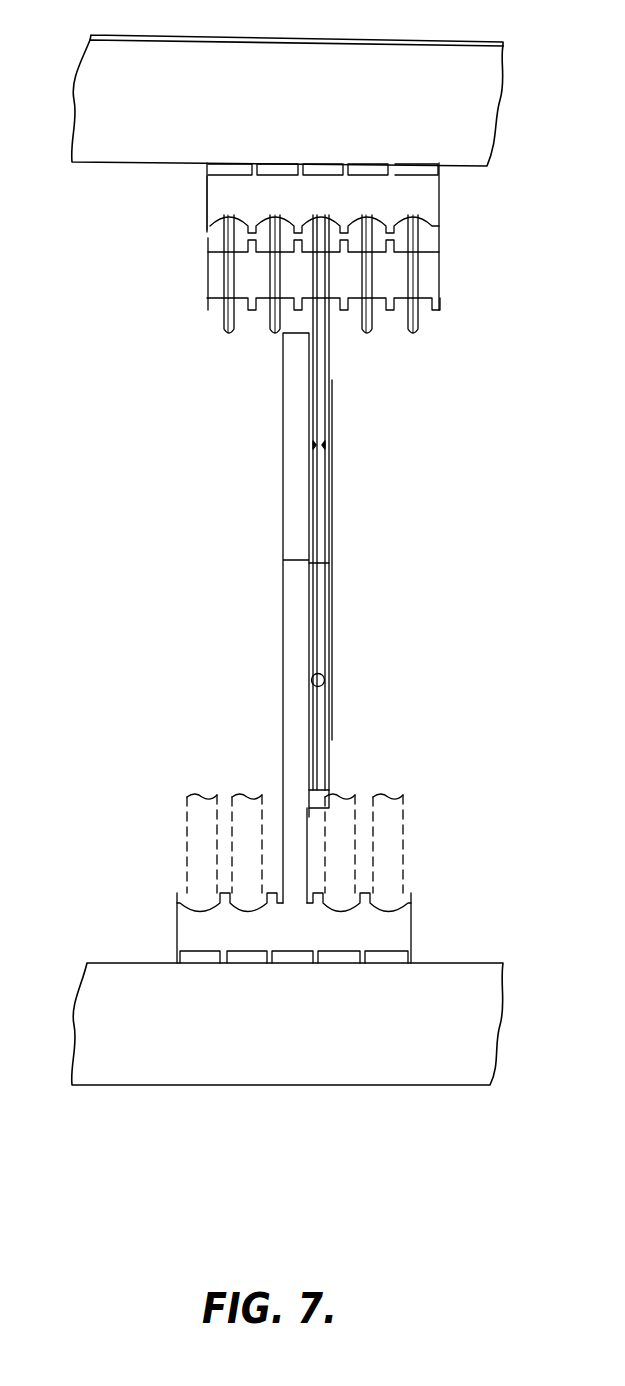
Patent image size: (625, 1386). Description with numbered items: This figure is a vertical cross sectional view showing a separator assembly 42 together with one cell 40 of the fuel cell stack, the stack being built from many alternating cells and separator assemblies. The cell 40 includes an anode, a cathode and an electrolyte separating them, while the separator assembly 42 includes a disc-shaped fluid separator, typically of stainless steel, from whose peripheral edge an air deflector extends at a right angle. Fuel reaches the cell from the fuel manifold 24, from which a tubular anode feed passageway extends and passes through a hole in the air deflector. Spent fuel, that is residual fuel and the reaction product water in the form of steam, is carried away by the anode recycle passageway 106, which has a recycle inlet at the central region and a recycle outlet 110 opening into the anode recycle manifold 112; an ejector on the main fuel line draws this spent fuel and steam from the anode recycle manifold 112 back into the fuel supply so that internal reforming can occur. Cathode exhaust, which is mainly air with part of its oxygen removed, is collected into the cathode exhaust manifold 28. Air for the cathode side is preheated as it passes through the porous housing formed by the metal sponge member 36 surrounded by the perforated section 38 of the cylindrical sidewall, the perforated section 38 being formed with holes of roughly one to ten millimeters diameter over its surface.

The fuel manifold 24 is at (432, 274).
The cathode exhaust manifold 28 is at (400, 928).
The metal sponge member 36 is at (389, 121).
The perforated section 38 is at (420, 40).
The cell 40 is at (358, 456).
The separator assembly 42 is at (267, 402).
The anode recycle passageway 106 is at (428, 236).
The recycle outlet 110 is at (320, 210).
The anode recycle manifold 112 is at (430, 192).